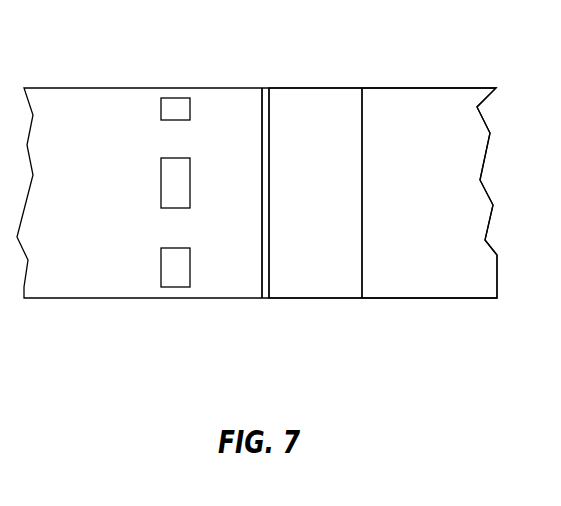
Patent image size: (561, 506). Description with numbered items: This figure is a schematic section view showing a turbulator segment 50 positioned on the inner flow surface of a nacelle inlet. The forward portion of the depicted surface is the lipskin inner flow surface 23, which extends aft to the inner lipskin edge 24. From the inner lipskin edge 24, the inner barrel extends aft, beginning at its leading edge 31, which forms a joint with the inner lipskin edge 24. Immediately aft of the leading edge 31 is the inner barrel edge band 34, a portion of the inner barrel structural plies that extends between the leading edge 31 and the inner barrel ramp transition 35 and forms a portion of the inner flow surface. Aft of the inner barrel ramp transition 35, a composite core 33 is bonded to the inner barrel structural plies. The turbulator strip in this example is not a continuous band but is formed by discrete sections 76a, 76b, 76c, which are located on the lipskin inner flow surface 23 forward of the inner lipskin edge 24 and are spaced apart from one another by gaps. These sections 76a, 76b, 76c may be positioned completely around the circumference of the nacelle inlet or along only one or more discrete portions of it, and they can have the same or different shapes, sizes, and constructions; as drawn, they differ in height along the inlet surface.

The turbulator segment 50 is at (192, 60).
The lipskin inner flow surface 23 is at (110, 275).
The inner lipskin edge 24 is at (265, 112).
The leading edge 31 is at (270, 278).
The composite core 33 is at (417, 110).
The inner barrel edge band 34 is at (320, 107).
The inner barrel ramp transition 35 is at (363, 278).
The section 76a is at (173, 107).
The section 76b is at (170, 180).
The section 76c is at (177, 272).